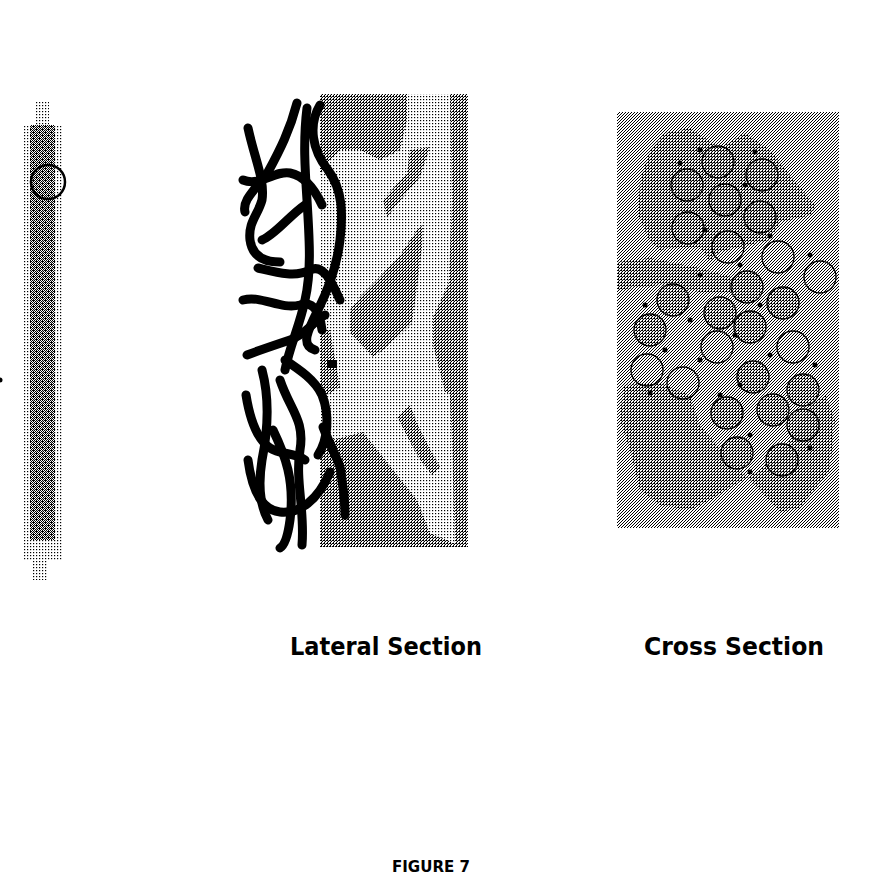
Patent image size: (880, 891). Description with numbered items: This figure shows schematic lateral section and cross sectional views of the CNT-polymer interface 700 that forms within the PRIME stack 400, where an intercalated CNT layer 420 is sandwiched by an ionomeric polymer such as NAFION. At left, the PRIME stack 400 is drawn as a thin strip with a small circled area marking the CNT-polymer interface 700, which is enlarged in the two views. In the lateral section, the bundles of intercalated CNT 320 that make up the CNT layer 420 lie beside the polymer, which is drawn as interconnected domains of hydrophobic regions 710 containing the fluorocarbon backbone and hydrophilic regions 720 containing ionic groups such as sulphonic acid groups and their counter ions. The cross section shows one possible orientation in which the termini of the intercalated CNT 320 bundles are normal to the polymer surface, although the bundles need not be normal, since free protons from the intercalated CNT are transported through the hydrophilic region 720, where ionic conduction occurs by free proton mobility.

The PRIME stack 400 is at (68, 120).
The CNT-polymer interface 700 is at (70, 180).
The intercalated CNT bundles 320 is at (262, 125).
The hydrophobic regions 710 is at (634, 119).
The hydrophilic regions 720 is at (648, 214).
The CNT layer 420 is at (327, 562).